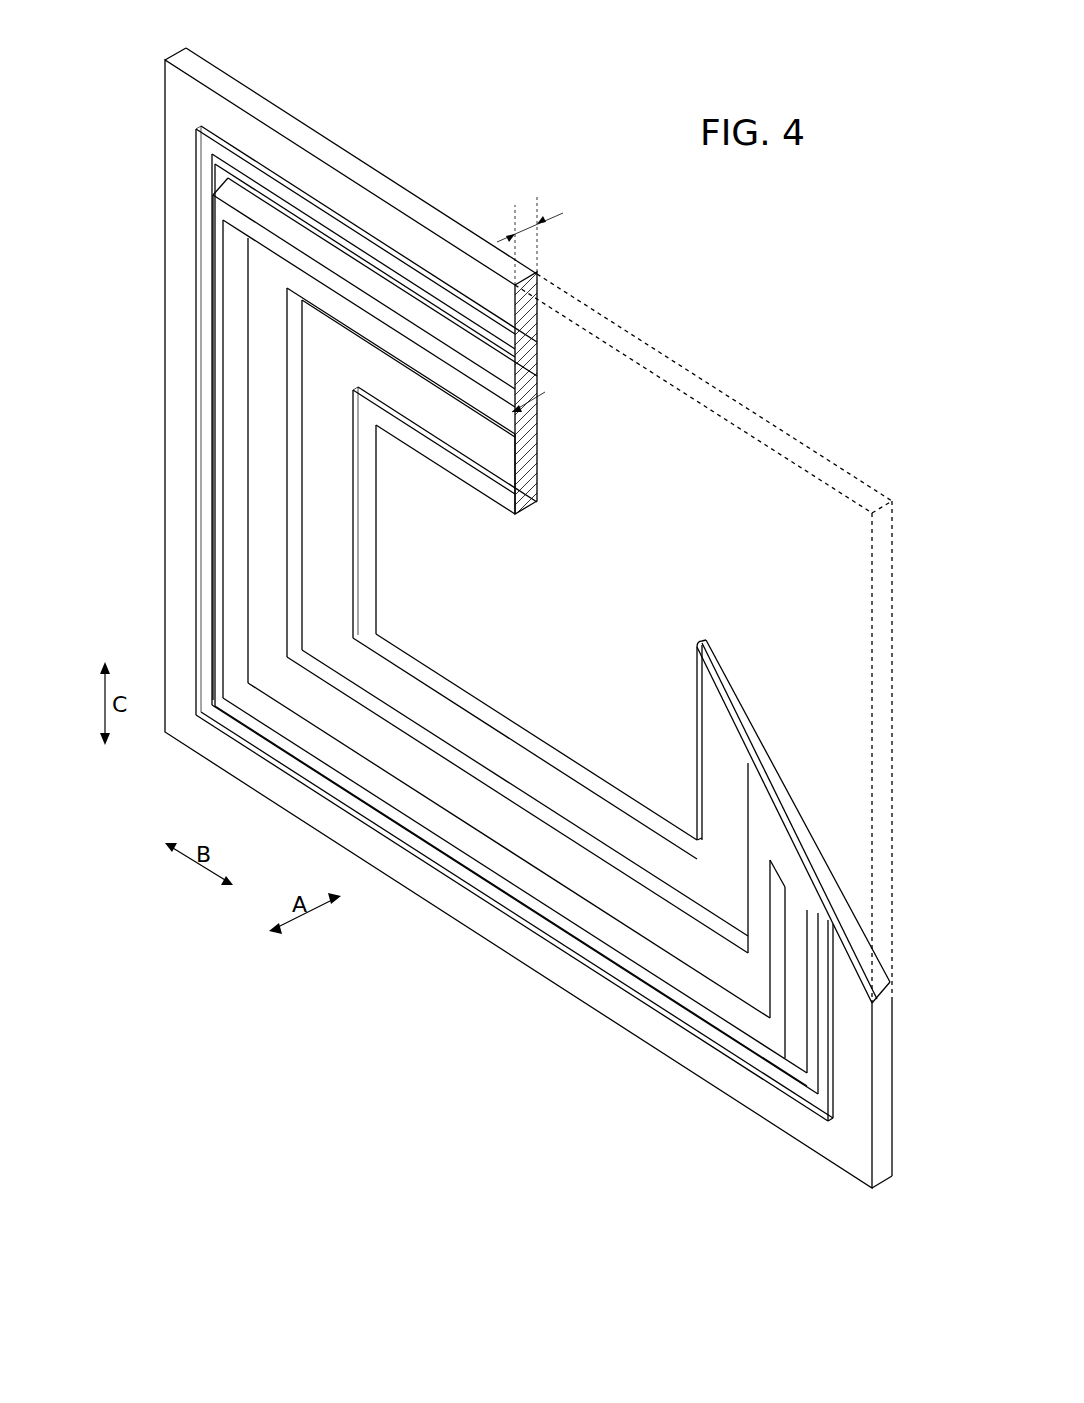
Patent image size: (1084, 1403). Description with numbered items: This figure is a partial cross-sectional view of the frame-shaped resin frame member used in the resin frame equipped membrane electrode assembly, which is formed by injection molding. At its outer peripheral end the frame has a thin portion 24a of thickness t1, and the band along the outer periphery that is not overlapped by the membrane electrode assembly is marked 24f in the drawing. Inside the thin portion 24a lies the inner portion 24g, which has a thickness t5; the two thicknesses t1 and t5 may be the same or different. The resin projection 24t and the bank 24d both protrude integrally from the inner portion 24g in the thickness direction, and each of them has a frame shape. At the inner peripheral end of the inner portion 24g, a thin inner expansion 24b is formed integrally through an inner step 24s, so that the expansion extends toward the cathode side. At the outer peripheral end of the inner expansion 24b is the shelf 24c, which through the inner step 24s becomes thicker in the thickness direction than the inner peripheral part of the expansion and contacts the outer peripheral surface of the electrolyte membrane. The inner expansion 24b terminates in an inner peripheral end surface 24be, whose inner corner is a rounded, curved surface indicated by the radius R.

The thin portion 24a is at (537, 274).
The thin inner expansion 24b is at (538, 487).
The shelf 24c is at (760, 822).
The bank 24d is at (468, 315).
The outer turn portion of coil 24f is at (419, 237).
The inner portion 24g is at (400, 352).
The resin projection 24t is at (437, 360).
The inner step 24s is at (512, 452).
The inner peripheral end surface 24be is at (702, 638).
The radius of bent portion R is at (695, 641).
The thickness of the thin portion t1 is at (531, 236).
The thickness of the inner portion t5 is at (539, 388).